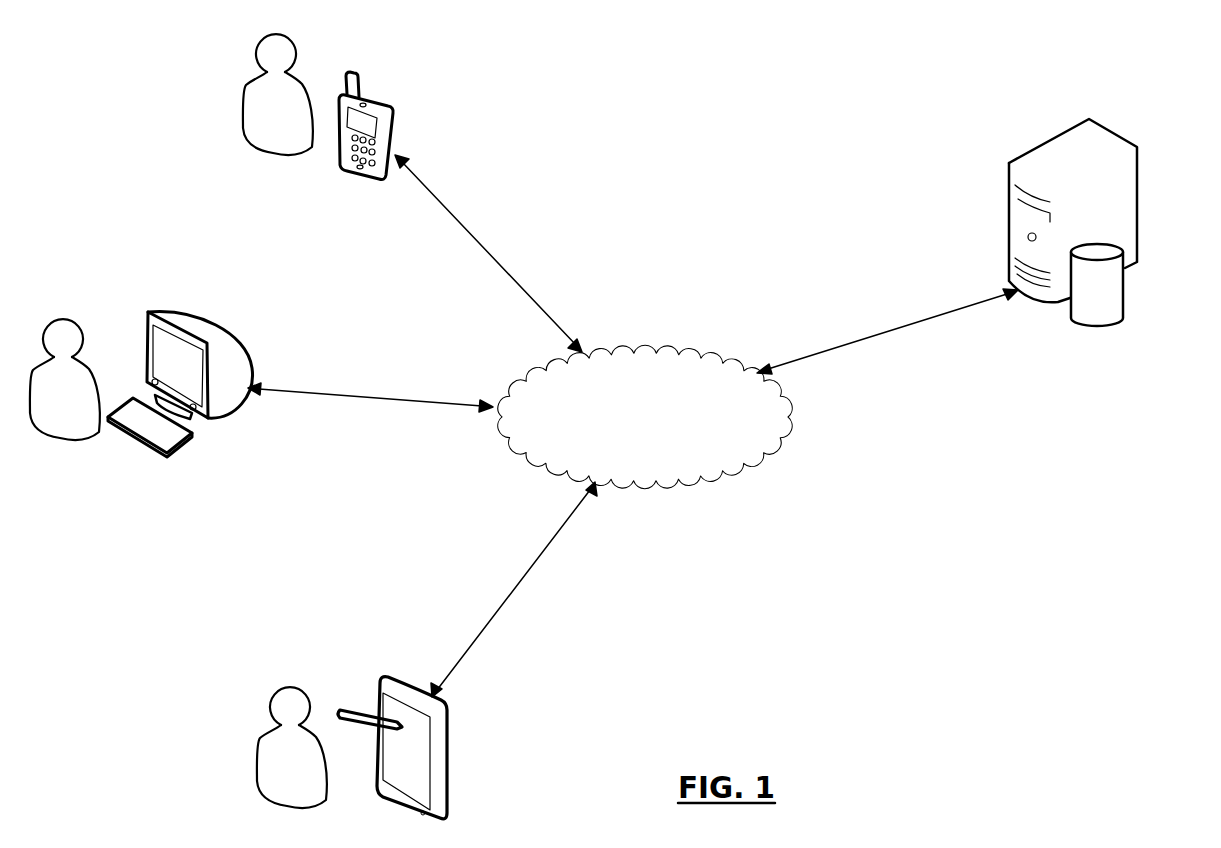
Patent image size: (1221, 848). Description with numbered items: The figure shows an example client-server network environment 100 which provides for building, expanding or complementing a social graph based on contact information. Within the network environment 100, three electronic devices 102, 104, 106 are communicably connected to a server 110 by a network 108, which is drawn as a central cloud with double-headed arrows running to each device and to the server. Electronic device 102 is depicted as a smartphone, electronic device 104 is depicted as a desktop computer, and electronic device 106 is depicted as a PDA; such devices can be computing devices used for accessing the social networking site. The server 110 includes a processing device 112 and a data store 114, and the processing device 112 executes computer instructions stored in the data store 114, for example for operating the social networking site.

The network environment 100 is at (767, 87).
The electronic device 102 is at (380, 95).
The electronic device 104 is at (217, 322).
The electronic device 106 is at (387, 675).
The network 108 is at (643, 347).
The server 110 is at (1038, 325).
The processing device 112 is at (1113, 130).
The data store 114 is at (1125, 303).